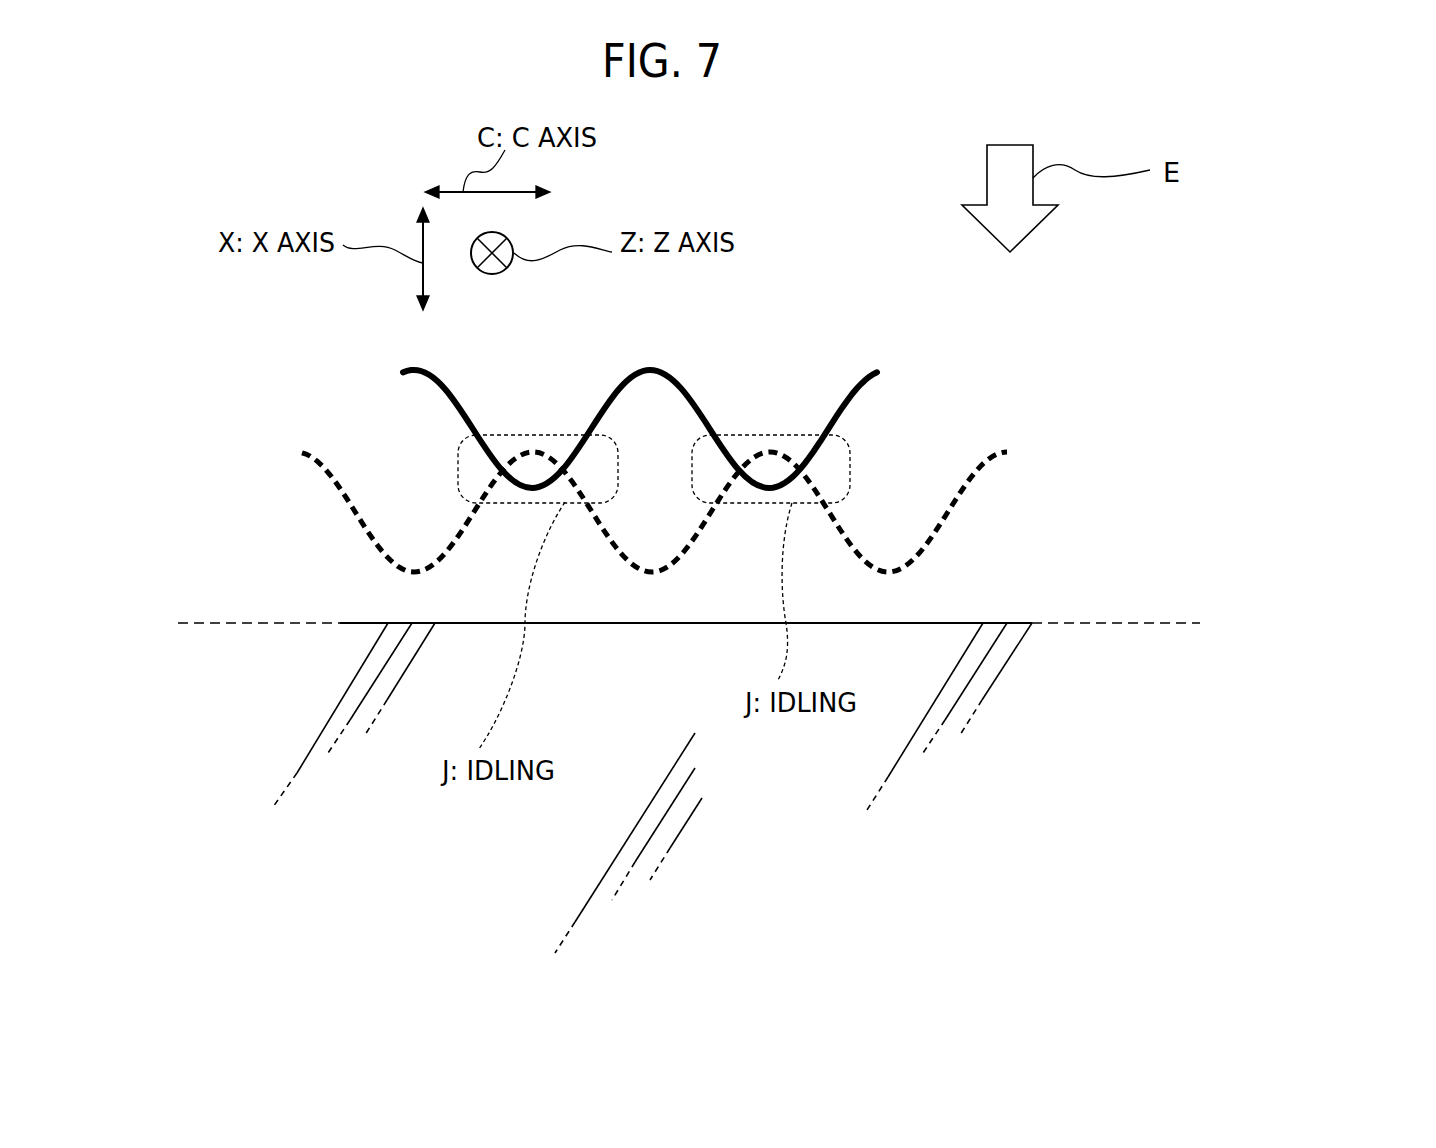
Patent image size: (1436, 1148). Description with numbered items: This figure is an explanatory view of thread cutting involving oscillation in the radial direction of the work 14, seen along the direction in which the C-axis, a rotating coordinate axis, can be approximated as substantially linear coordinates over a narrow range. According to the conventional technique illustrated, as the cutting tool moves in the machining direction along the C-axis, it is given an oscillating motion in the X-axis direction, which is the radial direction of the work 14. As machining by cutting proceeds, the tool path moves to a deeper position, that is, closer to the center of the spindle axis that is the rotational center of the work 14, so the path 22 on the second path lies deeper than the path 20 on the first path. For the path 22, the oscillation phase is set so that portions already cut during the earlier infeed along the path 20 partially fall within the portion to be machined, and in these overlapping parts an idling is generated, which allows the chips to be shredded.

The work 14 is at (370, 623).
The path on the first path 20 is at (848, 403).
The path on the second path 22 is at (970, 483).